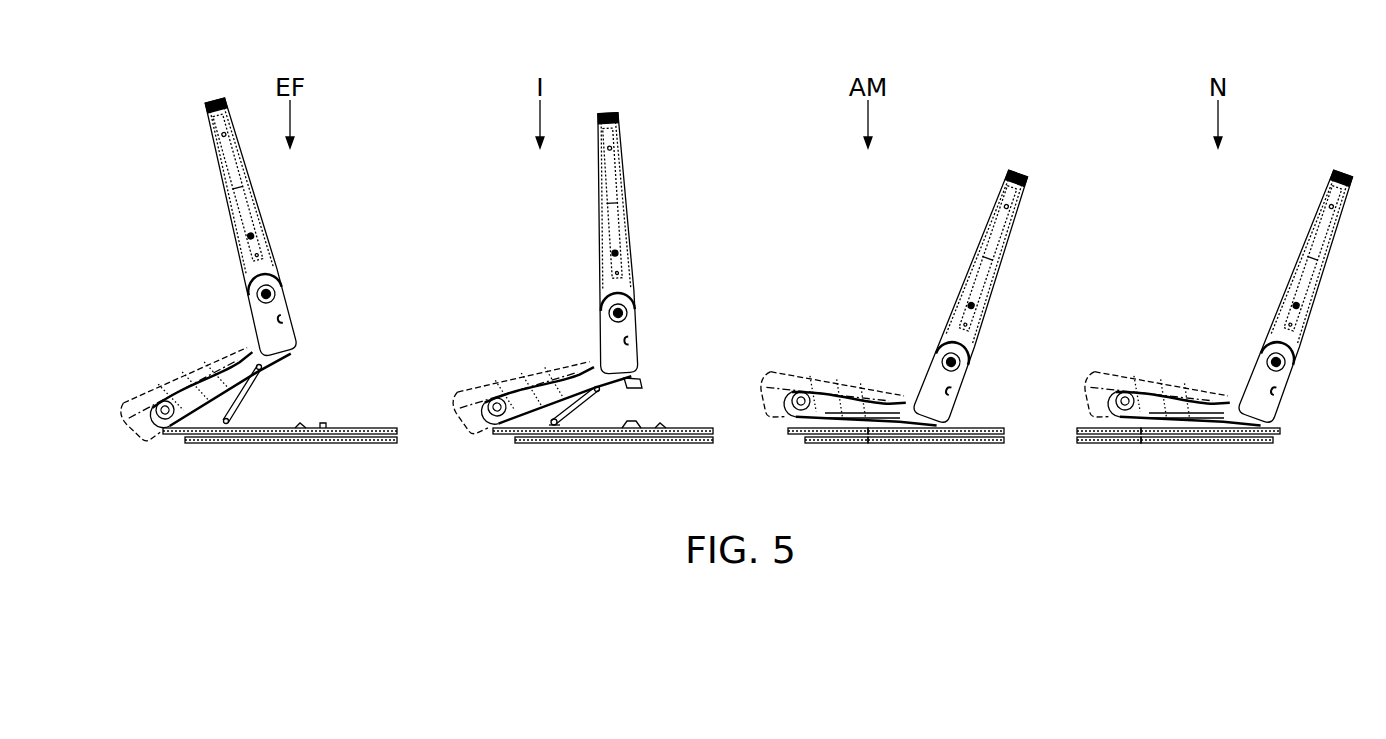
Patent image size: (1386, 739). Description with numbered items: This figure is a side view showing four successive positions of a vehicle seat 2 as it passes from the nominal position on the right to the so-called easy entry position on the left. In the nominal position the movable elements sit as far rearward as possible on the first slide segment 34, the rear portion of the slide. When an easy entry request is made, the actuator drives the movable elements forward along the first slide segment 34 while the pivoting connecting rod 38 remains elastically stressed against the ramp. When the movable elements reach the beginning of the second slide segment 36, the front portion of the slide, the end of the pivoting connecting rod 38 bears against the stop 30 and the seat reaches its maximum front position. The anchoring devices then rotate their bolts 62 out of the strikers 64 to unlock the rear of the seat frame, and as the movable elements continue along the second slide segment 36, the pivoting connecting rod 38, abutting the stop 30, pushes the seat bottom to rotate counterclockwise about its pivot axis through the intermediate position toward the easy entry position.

The vehicle seat 2 is at (183, 267).
The stop 30 is at (600, 391).
The pivoting connecting rod 38 is at (596, 392).
The bolt 62 is at (634, 386).
The striker 64 is at (627, 428).
The second slide segment 36 is at (868, 449).
The first slide segment 34 is at (870, 449).